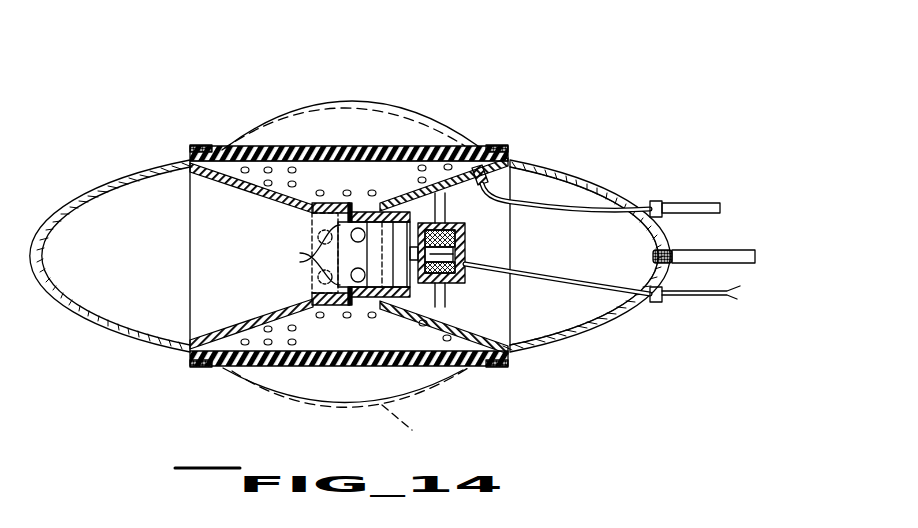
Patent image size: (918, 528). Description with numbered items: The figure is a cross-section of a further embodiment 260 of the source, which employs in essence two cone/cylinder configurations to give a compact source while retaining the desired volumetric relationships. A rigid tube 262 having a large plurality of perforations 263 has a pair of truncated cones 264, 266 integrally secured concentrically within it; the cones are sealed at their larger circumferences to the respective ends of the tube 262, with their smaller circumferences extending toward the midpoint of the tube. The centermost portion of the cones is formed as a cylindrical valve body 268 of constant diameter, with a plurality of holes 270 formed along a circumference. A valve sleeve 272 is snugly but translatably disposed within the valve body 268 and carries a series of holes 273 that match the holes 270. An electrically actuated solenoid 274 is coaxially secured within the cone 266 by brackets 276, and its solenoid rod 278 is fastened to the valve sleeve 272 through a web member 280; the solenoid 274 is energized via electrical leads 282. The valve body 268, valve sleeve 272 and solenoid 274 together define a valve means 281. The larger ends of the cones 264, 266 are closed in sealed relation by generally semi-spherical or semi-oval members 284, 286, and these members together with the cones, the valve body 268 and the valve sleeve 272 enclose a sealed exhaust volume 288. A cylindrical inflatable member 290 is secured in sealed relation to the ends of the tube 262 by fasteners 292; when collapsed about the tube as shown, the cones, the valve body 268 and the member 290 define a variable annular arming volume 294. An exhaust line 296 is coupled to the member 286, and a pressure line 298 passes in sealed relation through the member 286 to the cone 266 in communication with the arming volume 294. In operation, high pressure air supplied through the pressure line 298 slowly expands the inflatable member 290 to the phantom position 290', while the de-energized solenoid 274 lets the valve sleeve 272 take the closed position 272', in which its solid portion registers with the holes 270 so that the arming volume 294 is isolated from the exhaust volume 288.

The embodiment 260 is at (228, 76).
The rigid tube 262 is at (287, 163).
The perforations 263 is at (368, 149).
The truncated cone 264 is at (228, 178).
The truncated cone 266 is at (462, 180).
The valve body 268 is at (331, 203).
The holes 270 is at (353, 209).
The valve sleeve 272 is at (383, 287).
The sleeve position 272' is at (282, 259).
The holes 273 is at (312, 257).
The solenoid 274 is at (458, 267).
The brackets 276 is at (445, 211).
The solenoid rod 278 is at (458, 253).
The web member 280 is at (403, 283).
The valve means 281 is at (420, 298).
The electrical leads 282 is at (722, 293).
The semi-spherical member 284 is at (121, 342).
The semi-spherical member 286 is at (616, 318).
The exhaust volume 288 is at (143, 267).
The inflatable member 290 is at (345, 386).
The expanded position 290' is at (420, 425).
The fasteners 292 is at (203, 367).
The arming volume 294 is at (329, 344).
The exhaust line 296 is at (732, 252).
The pressure line 298 is at (703, 205).